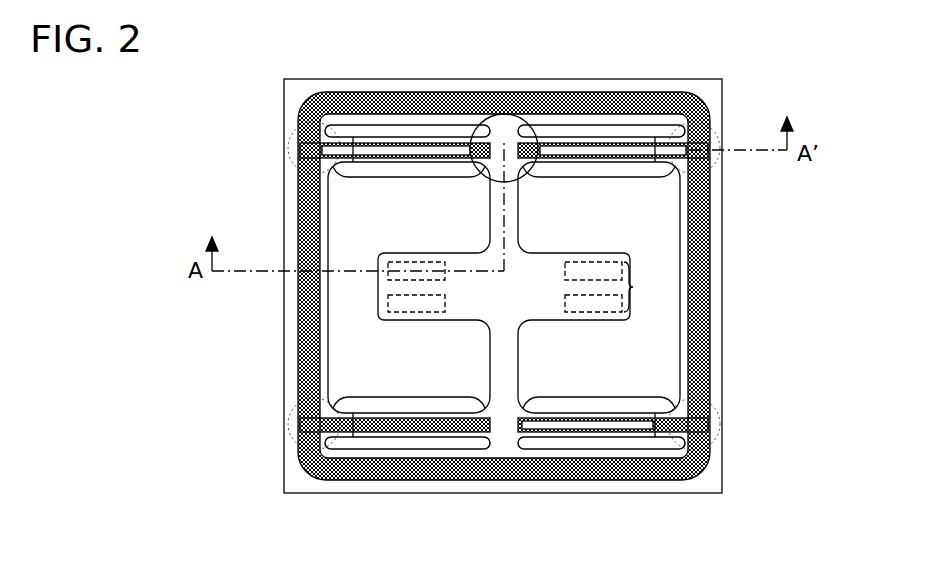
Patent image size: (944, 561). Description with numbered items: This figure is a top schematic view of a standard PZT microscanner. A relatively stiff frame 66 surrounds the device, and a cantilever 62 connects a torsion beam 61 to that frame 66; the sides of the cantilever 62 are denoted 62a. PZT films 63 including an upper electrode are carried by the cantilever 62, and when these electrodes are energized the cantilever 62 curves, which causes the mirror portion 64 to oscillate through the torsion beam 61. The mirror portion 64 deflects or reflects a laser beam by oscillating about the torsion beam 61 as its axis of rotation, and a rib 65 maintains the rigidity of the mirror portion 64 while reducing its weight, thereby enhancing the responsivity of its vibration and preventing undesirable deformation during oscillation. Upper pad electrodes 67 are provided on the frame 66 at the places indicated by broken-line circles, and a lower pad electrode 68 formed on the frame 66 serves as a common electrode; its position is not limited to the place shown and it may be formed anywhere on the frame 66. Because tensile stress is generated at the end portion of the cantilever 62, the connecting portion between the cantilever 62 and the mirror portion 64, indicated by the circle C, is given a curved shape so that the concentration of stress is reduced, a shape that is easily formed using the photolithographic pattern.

The torsion beam 61 is at (520, 362).
The cantilever 62 is at (418, 177).
The sides of the cantilever 62a is at (407, 130).
The PZT films 63 is at (623, 431).
The mirror portion 64 is at (537, 266).
The rib 65 is at (633, 287).
The frame 66 is at (610, 78).
The upper pad electrodes 67 is at (577, 150).
The lower pad electrode 68 is at (660, 93).
The circle C is at (487, 172).